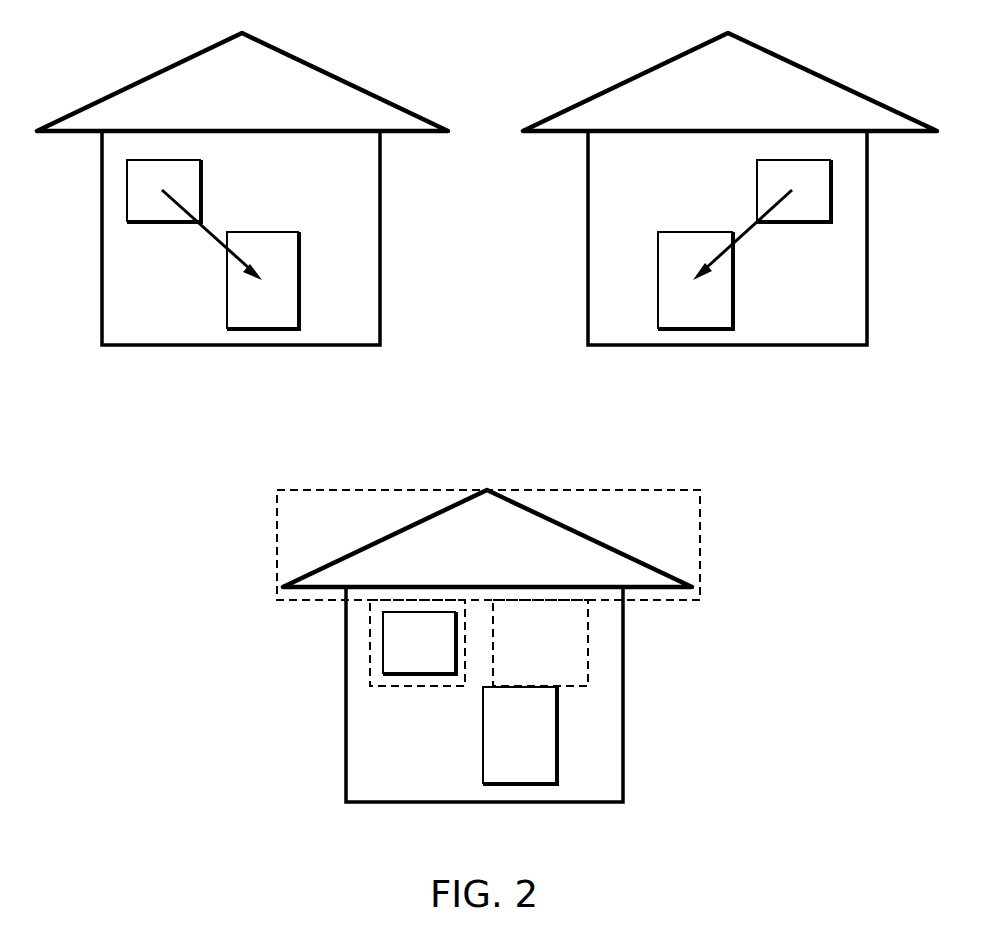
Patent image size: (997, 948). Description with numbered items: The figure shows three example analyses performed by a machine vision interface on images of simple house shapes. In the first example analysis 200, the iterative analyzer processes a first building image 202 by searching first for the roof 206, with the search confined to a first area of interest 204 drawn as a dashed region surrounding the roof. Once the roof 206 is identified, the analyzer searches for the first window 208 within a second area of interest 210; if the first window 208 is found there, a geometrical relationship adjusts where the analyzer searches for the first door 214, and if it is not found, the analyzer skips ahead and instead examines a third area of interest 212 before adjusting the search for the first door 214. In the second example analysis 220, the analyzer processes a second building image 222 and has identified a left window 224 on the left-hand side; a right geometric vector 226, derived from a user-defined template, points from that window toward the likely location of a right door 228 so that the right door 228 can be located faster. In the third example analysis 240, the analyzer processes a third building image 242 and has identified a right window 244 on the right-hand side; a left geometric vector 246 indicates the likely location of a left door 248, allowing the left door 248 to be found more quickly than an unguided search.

The first example analysis 200 is at (252, 444).
The first building image 202 is at (523, 518).
The first area of interest 204 is at (702, 543).
The roof 206 is at (383, 537).
The first window 208 is at (371, 672).
The second area of interest 210 is at (417, 687).
The third area of interest 212 is at (586, 692).
The first door 214 is at (557, 730).
The second example analysis 220 is at (87, 62).
The second building image 222 is at (180, 63).
The left window 224 is at (202, 190).
The right geometric vector 226 is at (203, 233).
The right door 228 is at (302, 278).
The third example analysis 240 is at (553, 62).
The third building image 242 is at (667, 63).
The right window 244 is at (755, 192).
The left geometric vector 246 is at (752, 233).
The left door 248 is at (657, 280).